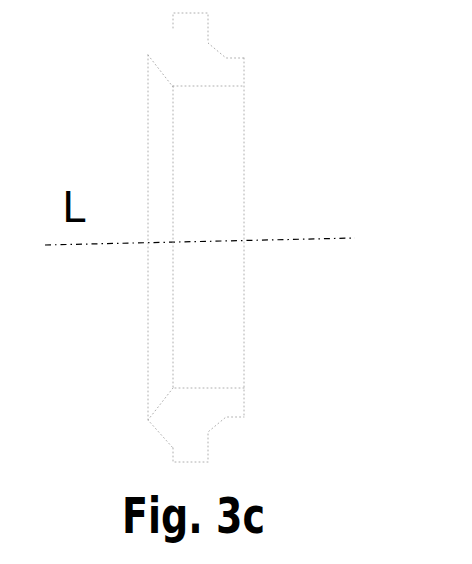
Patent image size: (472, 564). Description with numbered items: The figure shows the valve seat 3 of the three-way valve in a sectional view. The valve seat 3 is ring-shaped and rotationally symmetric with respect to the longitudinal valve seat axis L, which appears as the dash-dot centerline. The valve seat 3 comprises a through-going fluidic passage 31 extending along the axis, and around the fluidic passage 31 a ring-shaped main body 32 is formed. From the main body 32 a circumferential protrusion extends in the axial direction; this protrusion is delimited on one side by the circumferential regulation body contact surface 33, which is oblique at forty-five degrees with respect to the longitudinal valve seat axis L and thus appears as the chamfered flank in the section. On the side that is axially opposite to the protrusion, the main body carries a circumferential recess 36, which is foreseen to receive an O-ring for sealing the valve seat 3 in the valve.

The valve seat 3 is at (220, 238).
The fluidic passage 31 is at (230, 193).
The main body 32 is at (192, 413).
The regulation body contact surface 33 is at (163, 160).
The circumferential recess 36 is at (230, 47).